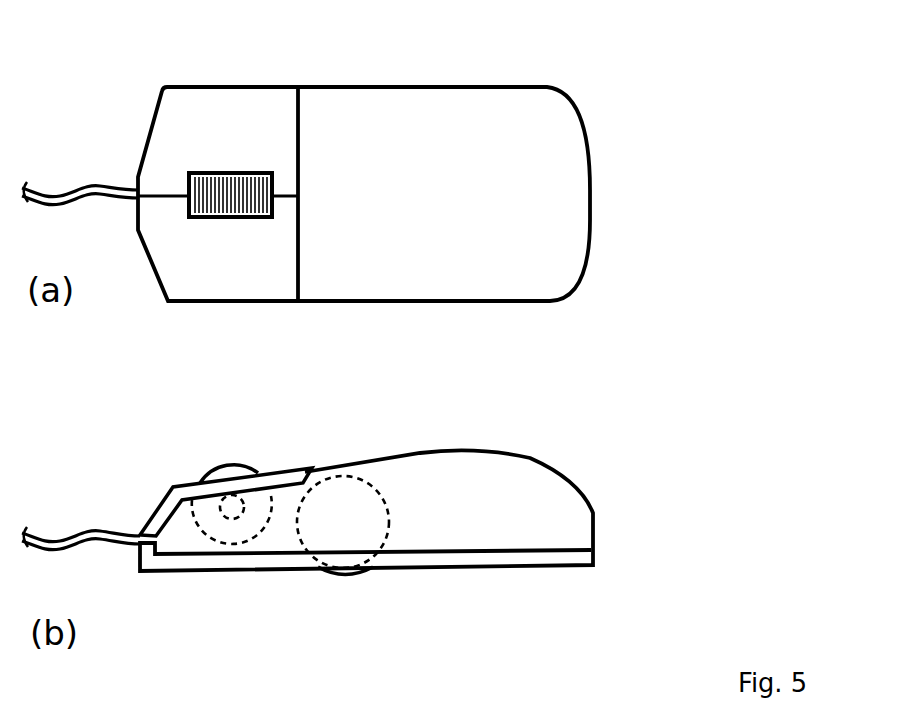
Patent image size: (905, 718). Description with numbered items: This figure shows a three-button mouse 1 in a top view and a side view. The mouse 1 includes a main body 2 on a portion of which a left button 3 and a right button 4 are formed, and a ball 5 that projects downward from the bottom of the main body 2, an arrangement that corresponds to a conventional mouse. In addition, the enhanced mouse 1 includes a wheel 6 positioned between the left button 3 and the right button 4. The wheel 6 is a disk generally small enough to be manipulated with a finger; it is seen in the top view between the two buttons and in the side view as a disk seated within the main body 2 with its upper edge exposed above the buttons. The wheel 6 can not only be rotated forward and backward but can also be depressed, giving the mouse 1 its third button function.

The mouse 1 is at (574, 53).
The main body 2 is at (488, 268).
The left button 3 is at (223, 280).
The right button 4 is at (213, 112).
The ball 5 is at (348, 575).
The wheel 6 is at (243, 175).